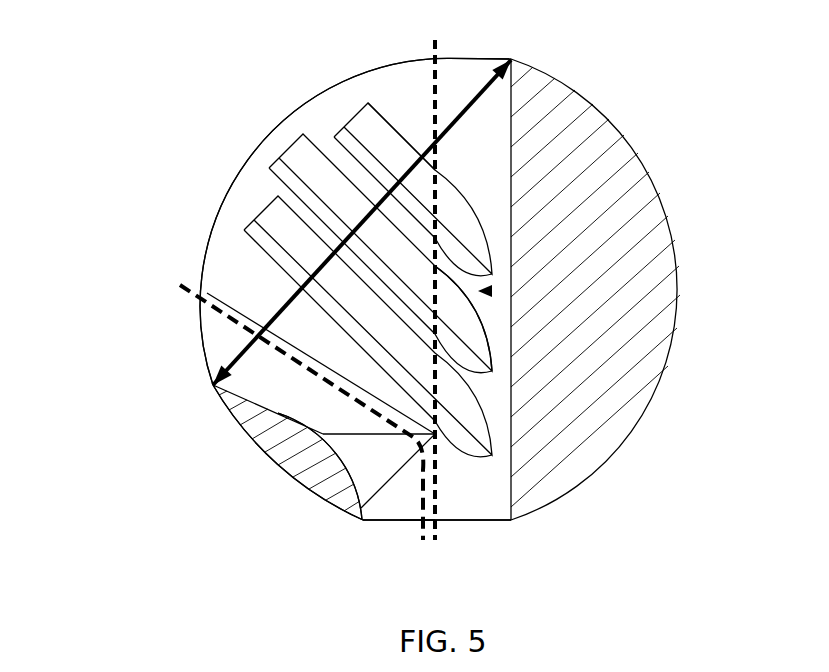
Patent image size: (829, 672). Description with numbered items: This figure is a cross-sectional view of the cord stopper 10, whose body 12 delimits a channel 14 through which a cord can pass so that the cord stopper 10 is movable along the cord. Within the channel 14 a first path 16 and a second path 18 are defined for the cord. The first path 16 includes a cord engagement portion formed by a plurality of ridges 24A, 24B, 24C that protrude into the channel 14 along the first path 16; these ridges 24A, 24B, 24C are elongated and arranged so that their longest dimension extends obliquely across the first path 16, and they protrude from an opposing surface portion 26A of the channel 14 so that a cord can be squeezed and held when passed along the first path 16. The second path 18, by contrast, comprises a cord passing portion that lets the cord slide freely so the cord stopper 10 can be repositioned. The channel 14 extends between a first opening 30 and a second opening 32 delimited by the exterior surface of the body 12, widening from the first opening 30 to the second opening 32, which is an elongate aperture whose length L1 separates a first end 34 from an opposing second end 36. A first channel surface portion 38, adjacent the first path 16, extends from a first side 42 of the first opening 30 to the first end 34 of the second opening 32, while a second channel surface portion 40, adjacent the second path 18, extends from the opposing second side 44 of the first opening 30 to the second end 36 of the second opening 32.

The cord stopper 10 is at (101, 150).
The body 12 is at (590, 160).
The channel 14 is at (482, 291).
The first path 16 is at (437, 463).
The second path 18 is at (208, 318).
The ridge 24A is at (268, 242).
The ridge 24B is at (300, 180).
The ridge 24C is at (365, 130).
The opposing surface portion 26A is at (415, 130).
The first opening 30 is at (412, 520).
The second opening 32 is at (287, 118).
The first end 34 is at (511, 60).
The second end 36 is at (212, 383).
The first channel surface portion 38 is at (512, 234).
The second channel surface portion 40 is at (278, 412).
The first side 42 is at (511, 520).
The second side 44 is at (362, 520).
The length L1 is at (440, 112).